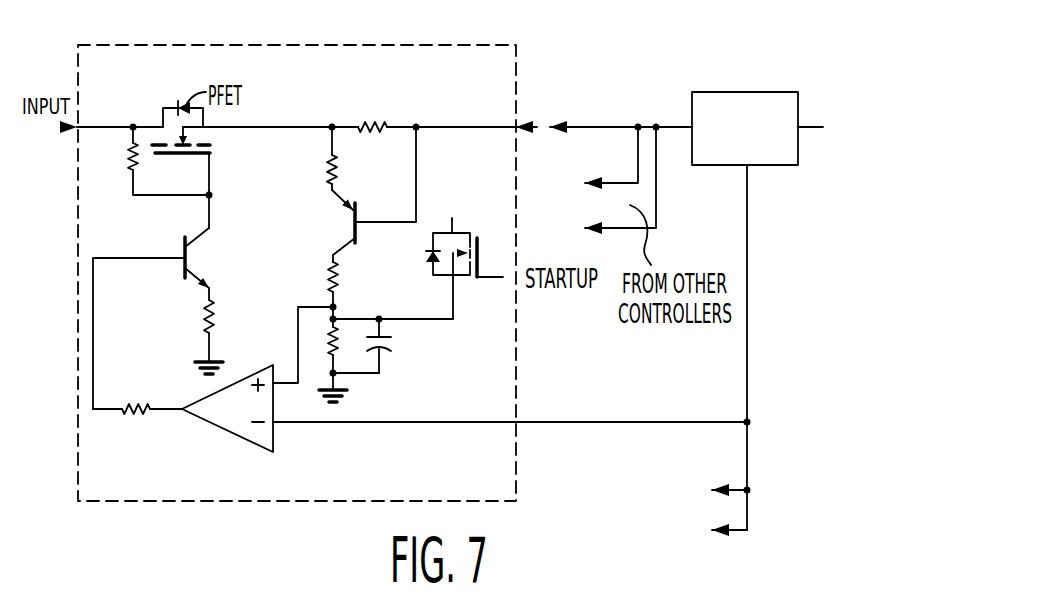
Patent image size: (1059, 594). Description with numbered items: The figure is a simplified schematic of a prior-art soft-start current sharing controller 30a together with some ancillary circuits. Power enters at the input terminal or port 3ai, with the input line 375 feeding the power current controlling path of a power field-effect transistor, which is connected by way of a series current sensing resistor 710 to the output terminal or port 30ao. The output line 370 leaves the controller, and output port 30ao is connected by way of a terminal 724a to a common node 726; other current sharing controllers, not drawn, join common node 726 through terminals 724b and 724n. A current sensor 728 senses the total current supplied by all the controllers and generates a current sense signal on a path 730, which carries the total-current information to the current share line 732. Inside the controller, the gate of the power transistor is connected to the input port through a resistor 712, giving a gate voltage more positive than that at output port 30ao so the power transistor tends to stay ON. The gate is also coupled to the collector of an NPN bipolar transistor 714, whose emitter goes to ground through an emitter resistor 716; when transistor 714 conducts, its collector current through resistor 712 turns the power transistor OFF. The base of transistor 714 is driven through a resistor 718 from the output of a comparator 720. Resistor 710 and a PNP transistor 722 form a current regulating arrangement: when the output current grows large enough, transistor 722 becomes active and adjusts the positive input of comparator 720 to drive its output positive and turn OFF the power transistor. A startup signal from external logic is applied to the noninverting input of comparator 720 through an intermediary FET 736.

The current sharing controller 30a is at (380, 500).
The input node 3ai is at (57, 146).
The input line 375 is at (78, 127).
The resistor 712 is at (127, 157).
The NPN bipolar transistor 714 is at (201, 236).
The emitter resistor 716 is at (213, 318).
The resistor 718 is at (135, 417).
The comparator 720 is at (233, 437).
The bipolar PNP transistor 722 is at (345, 238).
The series current sensing resistor 710 is at (373, 120).
The output terminal or port 30ao is at (451, 155).
The intermediary FET 736 is at (460, 277).
The output line 370 is at (517, 127).
The terminal 724a is at (560, 125).
The terminal 724b is at (612, 181).
The terminal 724n is at (612, 226).
The common node 726 is at (657, 126).
The current sensor 728 is at (783, 167).
The path 730 is at (747, 365).
The current share line 732 is at (516, 422).